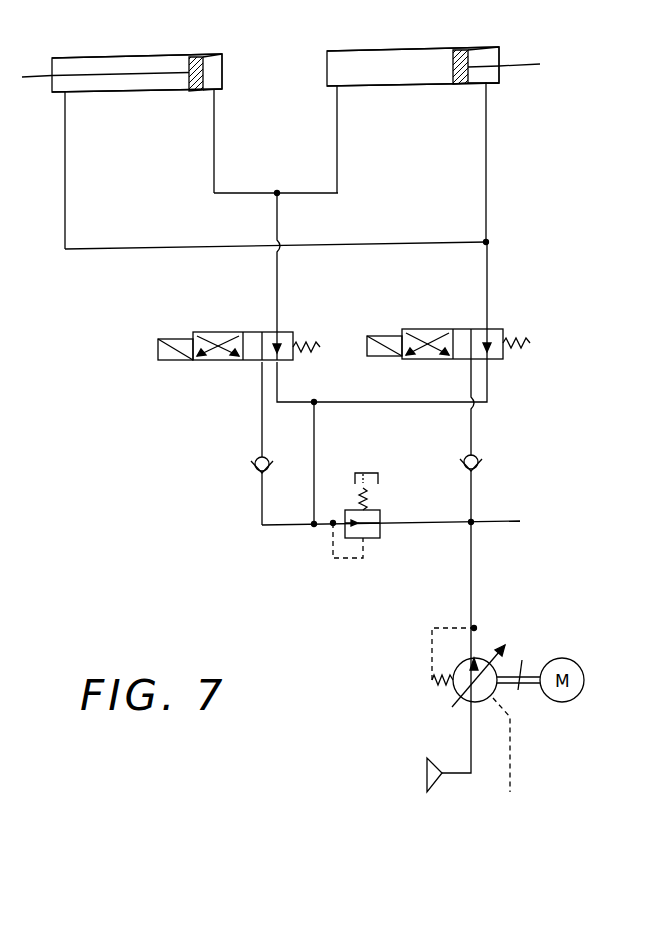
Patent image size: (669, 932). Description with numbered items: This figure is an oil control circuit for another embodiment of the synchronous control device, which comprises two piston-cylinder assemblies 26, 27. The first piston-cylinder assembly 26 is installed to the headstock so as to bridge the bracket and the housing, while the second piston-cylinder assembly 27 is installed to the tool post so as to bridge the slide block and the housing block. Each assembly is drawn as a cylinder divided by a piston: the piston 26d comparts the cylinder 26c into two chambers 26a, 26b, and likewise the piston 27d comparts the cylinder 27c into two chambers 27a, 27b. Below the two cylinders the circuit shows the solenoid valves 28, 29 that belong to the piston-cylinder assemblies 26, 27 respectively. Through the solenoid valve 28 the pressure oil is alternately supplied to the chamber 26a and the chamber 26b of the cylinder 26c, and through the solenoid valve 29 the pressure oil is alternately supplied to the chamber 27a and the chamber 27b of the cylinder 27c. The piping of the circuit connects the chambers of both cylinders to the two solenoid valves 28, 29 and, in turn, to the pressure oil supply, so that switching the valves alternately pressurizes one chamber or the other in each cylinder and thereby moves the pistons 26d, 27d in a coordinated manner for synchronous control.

The piston-cylinder assembly 26 is at (160, 43).
The chamber 26a is at (112, 87).
The chamber 26b is at (221, 74).
The cylinder 26c is at (120, 56).
The piston 26d is at (192, 90).
The piston-cylinder assembly 27 is at (430, 42).
The chamber 27a is at (494, 88).
The chamber 27b is at (381, 85).
The cylinder 27c is at (369, 51).
The piston 27d is at (459, 85).
The solenoid valve 28 is at (238, 361).
The solenoid valve 29 is at (422, 359).